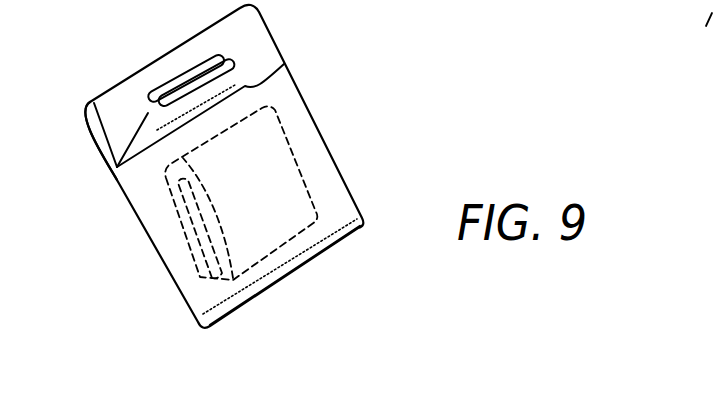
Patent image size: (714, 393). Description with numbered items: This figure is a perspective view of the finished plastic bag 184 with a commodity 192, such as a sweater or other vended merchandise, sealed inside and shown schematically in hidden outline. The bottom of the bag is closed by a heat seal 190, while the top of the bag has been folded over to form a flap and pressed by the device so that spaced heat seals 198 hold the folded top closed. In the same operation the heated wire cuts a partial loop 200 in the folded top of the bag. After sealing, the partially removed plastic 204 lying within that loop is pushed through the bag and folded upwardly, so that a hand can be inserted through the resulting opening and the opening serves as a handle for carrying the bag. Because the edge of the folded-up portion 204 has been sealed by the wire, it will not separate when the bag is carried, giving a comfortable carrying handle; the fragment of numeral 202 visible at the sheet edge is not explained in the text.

The plastic bag 184 is at (351, 185).
The heat seal 190 is at (341, 236).
The commodity 192 is at (297, 153).
The heat seals 198 is at (143, 107).
The partial loop 200 is at (112, 150).
The partially removed plastic 204 is at (177, 76).
The partial numeral (cut off) 202 is at (419, 5).